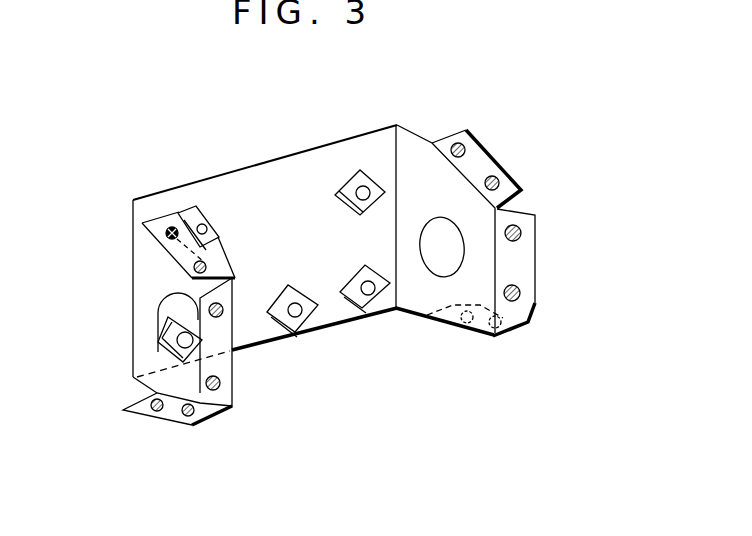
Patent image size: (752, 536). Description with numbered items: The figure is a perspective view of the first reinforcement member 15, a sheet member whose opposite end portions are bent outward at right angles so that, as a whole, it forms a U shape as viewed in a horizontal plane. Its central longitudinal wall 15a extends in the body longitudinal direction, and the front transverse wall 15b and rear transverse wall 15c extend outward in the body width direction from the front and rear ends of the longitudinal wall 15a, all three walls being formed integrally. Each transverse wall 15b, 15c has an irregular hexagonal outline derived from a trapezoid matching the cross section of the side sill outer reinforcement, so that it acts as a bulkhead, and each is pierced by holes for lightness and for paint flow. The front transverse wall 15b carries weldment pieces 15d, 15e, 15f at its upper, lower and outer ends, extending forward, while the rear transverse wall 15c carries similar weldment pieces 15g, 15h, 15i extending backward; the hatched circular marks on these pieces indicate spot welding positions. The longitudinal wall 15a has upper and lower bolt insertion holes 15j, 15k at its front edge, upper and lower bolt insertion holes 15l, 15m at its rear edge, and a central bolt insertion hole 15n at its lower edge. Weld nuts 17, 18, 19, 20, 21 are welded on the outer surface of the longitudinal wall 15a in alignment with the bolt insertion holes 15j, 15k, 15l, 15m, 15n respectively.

The first reinforcement member 15 is at (133, 197).
The longitudinal wall 15a is at (278, 185).
The front transverse wall 15b is at (148, 278).
The rear transverse wall 15c is at (415, 150).
The weldment piece 15d is at (166, 250).
The weldment piece 15e is at (167, 412).
The weldment piece 15f is at (226, 395).
The weldment piece 15g is at (483, 162).
The weldment piece 15h is at (522, 330).
The weldment piece 15i is at (530, 258).
The bolt insertion hole 15j is at (205, 212).
The bolt insertion hole 15k is at (163, 352).
The bolt insertion hole 15l is at (368, 185).
The bolt insertion hole 15m is at (388, 313).
The bolt insertion hole 15n is at (280, 322).
The weld nut 17 is at (183, 222).
The weld nut 18 is at (158, 323).
The weld nut 19 is at (345, 183).
The weld nut 20 is at (358, 308).
The weld nut 21 is at (315, 317).